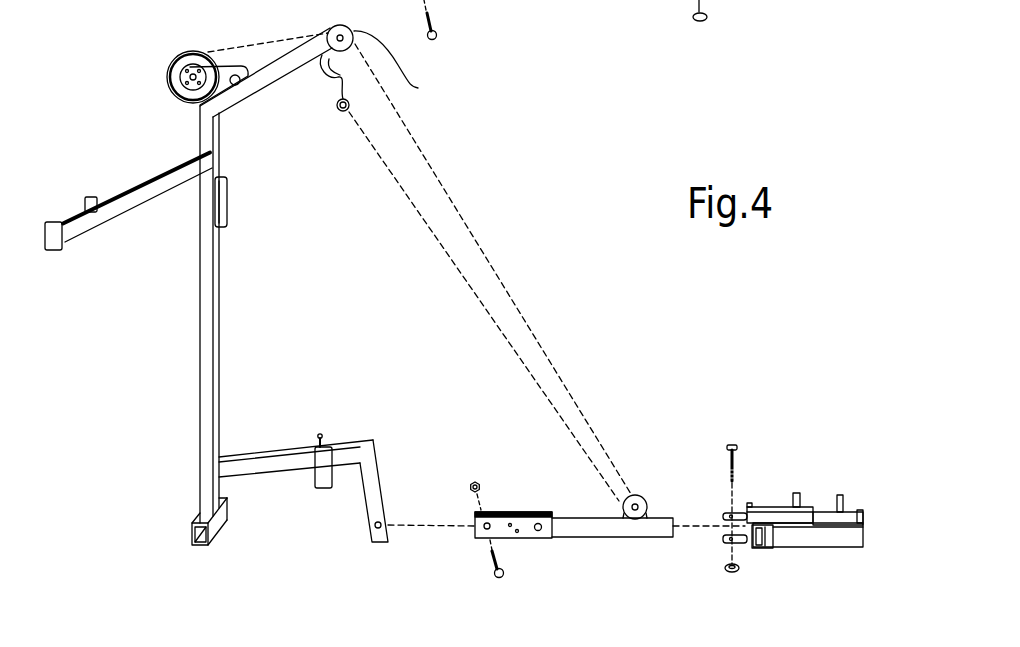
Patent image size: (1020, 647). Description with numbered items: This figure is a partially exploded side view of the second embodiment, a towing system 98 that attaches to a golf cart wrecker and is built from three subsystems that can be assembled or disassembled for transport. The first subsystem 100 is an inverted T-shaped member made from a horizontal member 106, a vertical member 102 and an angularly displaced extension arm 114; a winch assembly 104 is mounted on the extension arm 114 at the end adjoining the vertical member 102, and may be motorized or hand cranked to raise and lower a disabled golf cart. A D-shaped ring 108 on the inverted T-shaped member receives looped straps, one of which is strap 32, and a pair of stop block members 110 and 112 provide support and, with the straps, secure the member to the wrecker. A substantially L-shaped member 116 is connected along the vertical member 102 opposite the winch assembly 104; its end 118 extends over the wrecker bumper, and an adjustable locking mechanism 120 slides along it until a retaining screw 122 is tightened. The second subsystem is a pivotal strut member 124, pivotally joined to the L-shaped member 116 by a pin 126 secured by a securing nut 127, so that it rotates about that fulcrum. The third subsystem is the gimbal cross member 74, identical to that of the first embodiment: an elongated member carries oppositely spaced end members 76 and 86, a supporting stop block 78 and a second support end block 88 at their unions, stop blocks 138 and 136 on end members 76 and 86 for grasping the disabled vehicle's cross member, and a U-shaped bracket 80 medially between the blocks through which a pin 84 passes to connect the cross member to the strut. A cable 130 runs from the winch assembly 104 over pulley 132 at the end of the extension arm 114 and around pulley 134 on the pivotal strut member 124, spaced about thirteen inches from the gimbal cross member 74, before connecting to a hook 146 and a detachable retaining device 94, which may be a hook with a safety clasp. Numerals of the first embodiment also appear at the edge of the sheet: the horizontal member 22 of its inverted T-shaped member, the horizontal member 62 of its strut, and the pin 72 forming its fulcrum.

The horizontal member 22 is at (166, 0).
The strap 32 is at (310, 6).
The horizontal member 62 is at (603, 0).
The pin 72 is at (438, 34).
The gimbal cross member 74 is at (822, 393).
The end member 76 is at (843, 520).
The supporting stop block 78 is at (762, 510).
The U-shaped bracket 80 is at (721, 513).
The pin 84 is at (737, 447).
The end member 86 is at (863, 547).
The support end block 88 is at (787, 530).
The detachable retaining device 94 is at (333, 113).
The towing system 98 is at (546, 217).
The subsystem 100 is at (190, 390).
The vertical member 102 is at (220, 330).
The winch assembly 104 is at (150, 80).
The horizontal member 106 is at (218, 527).
The D-shaped ring 108 is at (226, 190).
The stop block member 110 is at (58, 250).
The stop block member 112 is at (90, 196).
The extension arm 114 is at (240, 100).
The L-shaped member 116 is at (275, 447).
The end 118 is at (373, 440).
The locking mechanism 120 is at (323, 490).
The retaining screw 122 is at (318, 434).
The pivotal strut member 124 is at (610, 551).
The pin 126 is at (497, 572).
The securing nut 127 is at (471, 482).
The cable 130 is at (270, 41).
The pulley 132 is at (398, 66).
The pulley 134 is at (647, 496).
The stop block 136 is at (863, 522).
The stop block 138 is at (838, 512).
The hook 146 is at (306, 91).